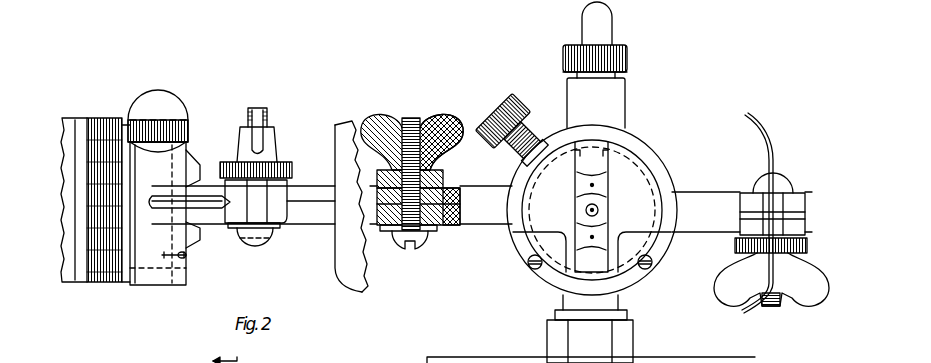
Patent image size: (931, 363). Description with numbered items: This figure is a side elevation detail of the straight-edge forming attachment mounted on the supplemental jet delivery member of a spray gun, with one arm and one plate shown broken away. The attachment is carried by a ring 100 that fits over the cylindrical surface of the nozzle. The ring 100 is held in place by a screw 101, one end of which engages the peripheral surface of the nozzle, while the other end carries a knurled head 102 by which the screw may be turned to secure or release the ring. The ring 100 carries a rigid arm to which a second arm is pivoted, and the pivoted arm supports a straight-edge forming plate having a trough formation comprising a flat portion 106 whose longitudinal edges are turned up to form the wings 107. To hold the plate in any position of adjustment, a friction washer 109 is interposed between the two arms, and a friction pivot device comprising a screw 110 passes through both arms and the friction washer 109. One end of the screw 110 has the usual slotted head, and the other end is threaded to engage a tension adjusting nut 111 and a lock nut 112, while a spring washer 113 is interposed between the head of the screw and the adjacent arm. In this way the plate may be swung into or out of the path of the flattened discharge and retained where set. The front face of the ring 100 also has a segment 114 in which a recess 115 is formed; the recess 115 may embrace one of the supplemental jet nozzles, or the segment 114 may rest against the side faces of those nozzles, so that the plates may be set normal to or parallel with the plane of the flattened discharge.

The ring 100 is at (633, 135).
The screw 101 is at (537, 133).
The knurled head 102 is at (177, 92).
The flat portion 106 is at (772, 225).
The wings 107 is at (754, 121).
The friction washer 109 is at (437, 228).
The screw 110 is at (408, 118).
The tension adjusting nut 111 is at (368, 193).
The lock nut 112 is at (368, 113).
The spring washer 113 is at (428, 232).
The segment 114 is at (547, 282).
The recess 115 is at (610, 255).